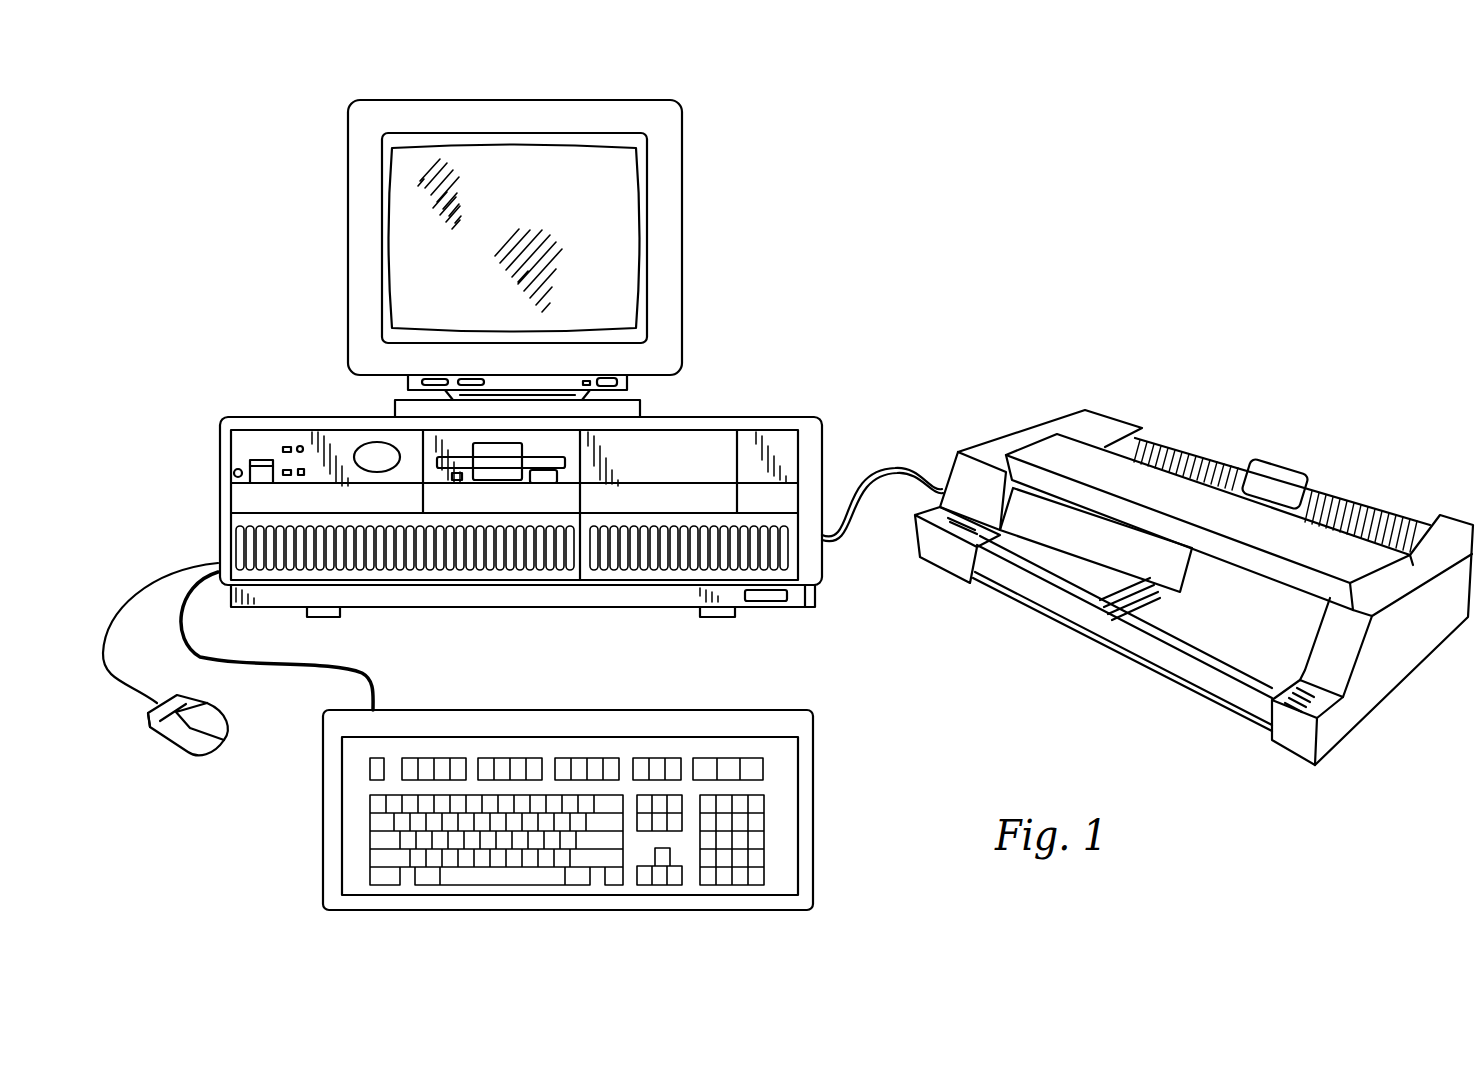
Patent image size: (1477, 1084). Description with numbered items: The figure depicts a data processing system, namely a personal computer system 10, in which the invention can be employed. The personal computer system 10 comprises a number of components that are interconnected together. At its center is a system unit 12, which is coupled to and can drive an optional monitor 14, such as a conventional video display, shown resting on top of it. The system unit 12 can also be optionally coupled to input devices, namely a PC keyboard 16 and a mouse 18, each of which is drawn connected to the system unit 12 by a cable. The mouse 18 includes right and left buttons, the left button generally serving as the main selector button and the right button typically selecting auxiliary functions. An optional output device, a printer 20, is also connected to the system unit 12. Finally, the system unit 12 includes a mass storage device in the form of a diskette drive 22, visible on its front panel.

The personal computer system 10 is at (906, 222).
The system unit 12 is at (745, 408).
The monitor 14 is at (692, 270).
The PC keyboard 16 is at (685, 703).
The mouse 18 is at (163, 732).
The printer 20 is at (1018, 415).
The diskette drive 22 is at (510, 480).